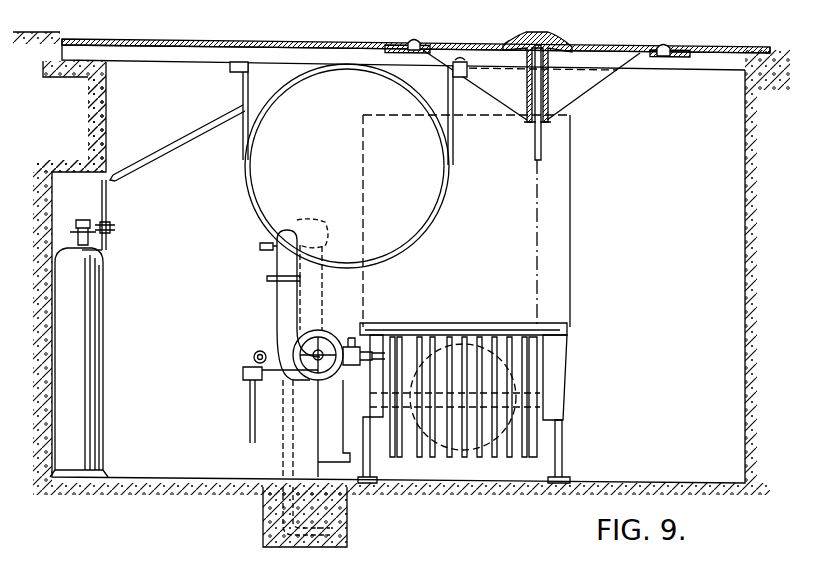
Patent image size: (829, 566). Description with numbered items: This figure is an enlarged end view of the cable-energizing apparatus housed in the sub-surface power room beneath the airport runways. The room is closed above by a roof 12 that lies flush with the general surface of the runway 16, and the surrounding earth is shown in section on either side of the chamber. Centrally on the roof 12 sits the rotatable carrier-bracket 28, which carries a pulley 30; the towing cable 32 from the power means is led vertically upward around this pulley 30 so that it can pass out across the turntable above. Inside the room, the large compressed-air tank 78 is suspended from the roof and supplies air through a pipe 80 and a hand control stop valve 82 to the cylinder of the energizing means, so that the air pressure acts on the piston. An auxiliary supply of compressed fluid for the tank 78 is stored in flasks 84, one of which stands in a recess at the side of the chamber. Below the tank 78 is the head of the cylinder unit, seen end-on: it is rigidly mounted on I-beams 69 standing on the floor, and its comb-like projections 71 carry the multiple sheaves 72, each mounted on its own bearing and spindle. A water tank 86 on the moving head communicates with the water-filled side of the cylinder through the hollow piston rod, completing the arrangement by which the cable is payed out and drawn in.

The roof 12 is at (332, 42).
The runway surface 16 is at (26, 46).
The rotatable carrier-bracket 28 is at (567, 43).
The pulley 30 is at (541, 147).
The towing cable 32 is at (537, 277).
The I-beams 69 is at (562, 450).
The comb-like projections 71 is at (446, 460).
The sheaves 72 is at (527, 462).
The tank 78 is at (438, 180).
The pipe 80 is at (278, 299).
The hand control stop valve 82 is at (302, 342).
The flasks 84 is at (100, 278).
The tank 86 is at (565, 298).